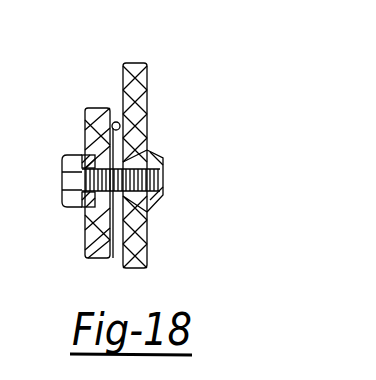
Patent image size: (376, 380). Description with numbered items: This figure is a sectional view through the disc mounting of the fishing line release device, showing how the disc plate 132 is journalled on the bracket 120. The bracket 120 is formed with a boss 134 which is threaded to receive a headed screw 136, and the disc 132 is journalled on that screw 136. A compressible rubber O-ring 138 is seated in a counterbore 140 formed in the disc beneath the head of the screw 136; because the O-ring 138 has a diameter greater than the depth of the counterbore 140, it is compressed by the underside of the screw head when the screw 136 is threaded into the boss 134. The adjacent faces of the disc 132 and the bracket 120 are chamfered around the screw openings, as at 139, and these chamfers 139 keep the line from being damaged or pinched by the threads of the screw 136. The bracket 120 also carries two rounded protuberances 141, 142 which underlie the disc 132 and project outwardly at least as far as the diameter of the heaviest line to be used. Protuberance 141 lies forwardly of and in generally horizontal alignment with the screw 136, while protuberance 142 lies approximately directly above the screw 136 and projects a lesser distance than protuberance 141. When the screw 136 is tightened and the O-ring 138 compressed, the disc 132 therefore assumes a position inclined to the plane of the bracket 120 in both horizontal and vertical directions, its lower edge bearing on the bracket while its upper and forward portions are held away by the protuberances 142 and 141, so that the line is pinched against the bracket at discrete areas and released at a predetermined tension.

The bracket 120 is at (147, 64).
The disc plate 132 is at (88, 106).
The boss 134 is at (161, 149).
The headed screw 136 is at (63, 179).
The O-ring 138 is at (87, 150).
The chamfers 139 is at (89, 230).
The counterbore 140 is at (87, 222).
The protuberance 141 is at (149, 124).
The protuberance 142 is at (150, 90).